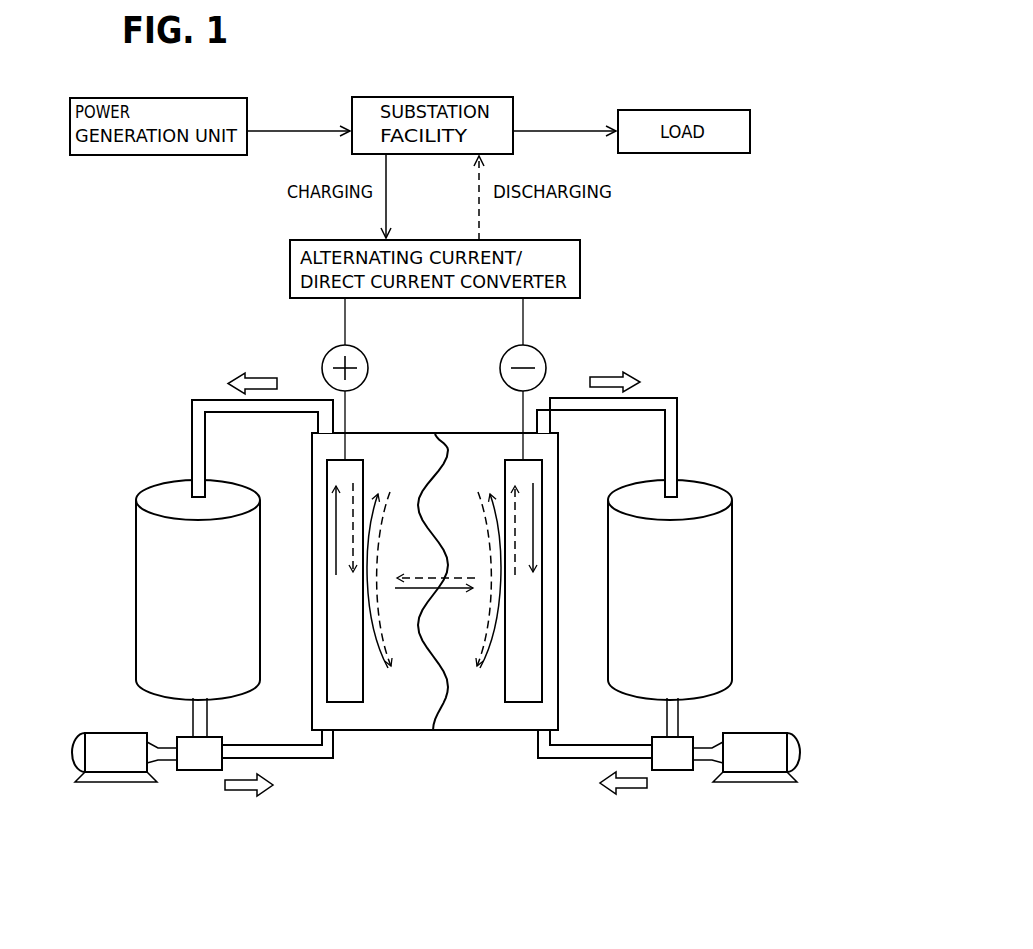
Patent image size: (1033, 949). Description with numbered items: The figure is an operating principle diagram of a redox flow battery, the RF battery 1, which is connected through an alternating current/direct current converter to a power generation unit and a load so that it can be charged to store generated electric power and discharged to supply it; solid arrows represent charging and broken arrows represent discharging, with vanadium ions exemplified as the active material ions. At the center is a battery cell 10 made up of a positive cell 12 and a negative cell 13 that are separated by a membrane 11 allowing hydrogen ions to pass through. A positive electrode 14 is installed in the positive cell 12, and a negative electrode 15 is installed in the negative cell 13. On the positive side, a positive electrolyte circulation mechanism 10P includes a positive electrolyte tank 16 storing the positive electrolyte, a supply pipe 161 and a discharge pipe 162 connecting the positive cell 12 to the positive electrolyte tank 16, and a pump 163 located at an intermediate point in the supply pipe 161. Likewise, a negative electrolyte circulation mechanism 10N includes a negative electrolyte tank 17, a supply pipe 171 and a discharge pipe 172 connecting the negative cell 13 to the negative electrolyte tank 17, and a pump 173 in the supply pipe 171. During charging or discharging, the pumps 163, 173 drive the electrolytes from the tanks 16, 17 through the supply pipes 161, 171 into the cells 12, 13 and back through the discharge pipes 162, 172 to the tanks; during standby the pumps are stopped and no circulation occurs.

The RF battery 1 is at (715, 336).
The battery cell 10 is at (436, 586).
The membrane 11 is at (433, 730).
The positive cell 12 is at (377, 732).
The negative cell 13 is at (497, 732).
The positive electrode 14 is at (326, 690).
The negative electrode 15 is at (546, 690).
The positive electrolyte tank 16 is at (153, 487).
The negative electrolyte tank 17 is at (715, 487).
The supply pipe 161 is at (300, 757).
The discharge pipe 162 is at (208, 398).
The pump 163 is at (100, 733).
The supply pipe 171 is at (575, 757).
The discharge pipe 172 is at (660, 398).
The pump 173 is at (775, 733).
The positive electrolyte circulation mechanism 10P is at (196, 600).
The negative electrolyte circulation mechanism 10N is at (675, 601).